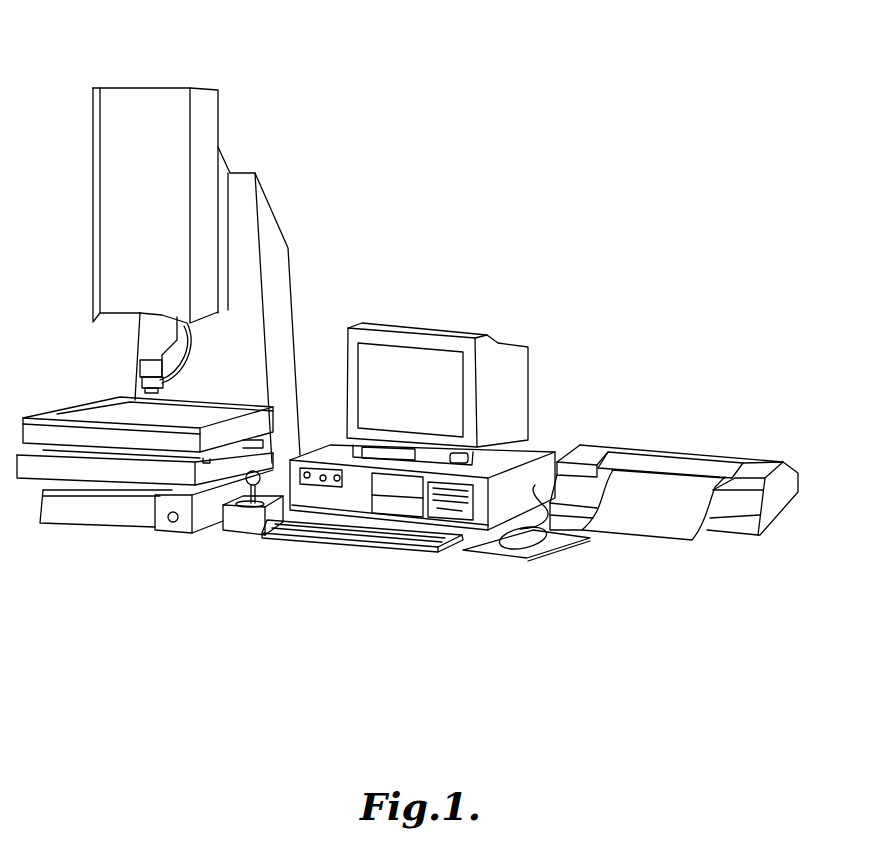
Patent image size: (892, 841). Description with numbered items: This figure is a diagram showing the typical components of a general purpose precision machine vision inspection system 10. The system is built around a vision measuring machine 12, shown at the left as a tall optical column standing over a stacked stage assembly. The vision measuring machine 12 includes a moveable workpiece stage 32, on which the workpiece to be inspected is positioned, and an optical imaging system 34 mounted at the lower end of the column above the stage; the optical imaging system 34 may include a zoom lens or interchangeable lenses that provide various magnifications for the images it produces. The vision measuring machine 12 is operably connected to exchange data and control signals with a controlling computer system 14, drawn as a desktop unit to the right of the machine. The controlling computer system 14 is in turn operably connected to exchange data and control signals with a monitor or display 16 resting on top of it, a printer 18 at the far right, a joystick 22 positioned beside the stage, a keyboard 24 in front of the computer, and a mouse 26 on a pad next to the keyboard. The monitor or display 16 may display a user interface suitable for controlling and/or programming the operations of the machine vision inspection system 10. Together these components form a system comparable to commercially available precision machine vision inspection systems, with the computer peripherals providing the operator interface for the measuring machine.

The machine vision inspection system 10 is at (532, 149).
The vision measuring machine 12 is at (145, 88).
The controlling computer system 14 is at (533, 448).
The monitor or display 16 is at (422, 326).
The printer 18 is at (685, 452).
The joystick 22 is at (240, 532).
The keyboard 24 is at (347, 543).
The mouse 26 is at (547, 550).
The moveable workpiece stage 32 is at (67, 405).
The optical imaging system 34 is at (140, 315).